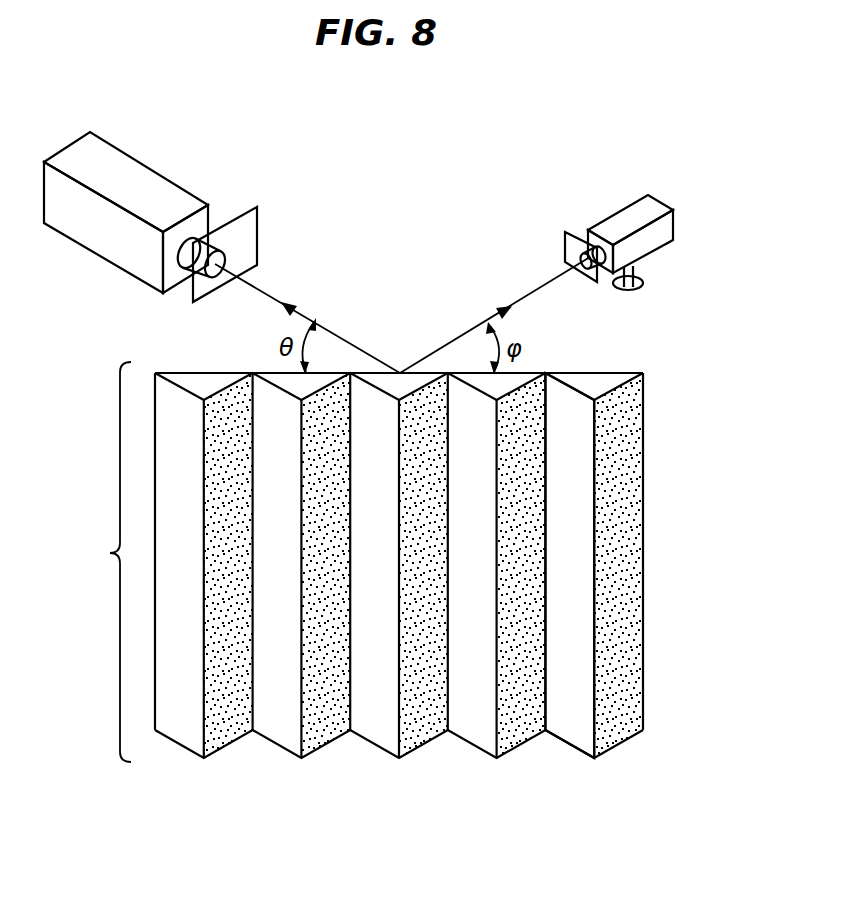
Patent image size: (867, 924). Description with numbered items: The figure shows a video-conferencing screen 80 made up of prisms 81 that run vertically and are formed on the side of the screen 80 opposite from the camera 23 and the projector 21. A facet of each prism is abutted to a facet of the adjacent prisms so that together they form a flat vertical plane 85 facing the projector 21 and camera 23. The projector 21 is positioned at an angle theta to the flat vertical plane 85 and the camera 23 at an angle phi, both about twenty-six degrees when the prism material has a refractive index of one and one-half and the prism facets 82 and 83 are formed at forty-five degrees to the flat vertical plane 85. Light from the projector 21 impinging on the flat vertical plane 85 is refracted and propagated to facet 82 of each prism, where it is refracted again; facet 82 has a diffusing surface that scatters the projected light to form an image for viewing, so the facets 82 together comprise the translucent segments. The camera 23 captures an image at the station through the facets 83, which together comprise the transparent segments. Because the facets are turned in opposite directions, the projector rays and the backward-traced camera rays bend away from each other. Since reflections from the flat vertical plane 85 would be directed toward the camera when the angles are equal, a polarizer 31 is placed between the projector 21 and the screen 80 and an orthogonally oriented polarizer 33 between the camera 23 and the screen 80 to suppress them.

The projector 21 is at (137, 158).
The camera 23 is at (609, 219).
The polarizer 31 is at (258, 222).
The polarizer 33 is at (566, 250).
The screen 80 is at (102, 567).
The prisms 81 is at (605, 377).
The prism facet 82 is at (630, 548).
The prism facet 83 is at (581, 455).
The flat vertical plane 85 is at (527, 372).